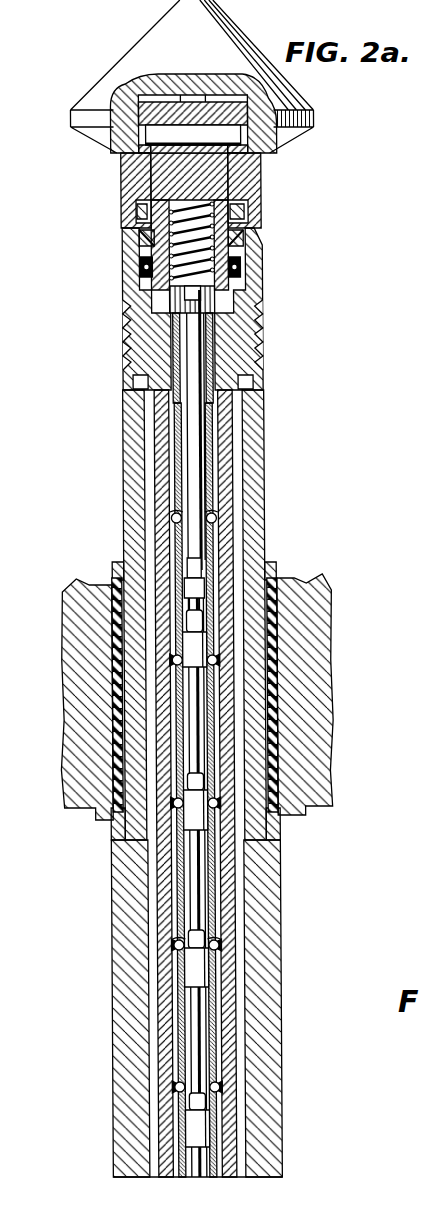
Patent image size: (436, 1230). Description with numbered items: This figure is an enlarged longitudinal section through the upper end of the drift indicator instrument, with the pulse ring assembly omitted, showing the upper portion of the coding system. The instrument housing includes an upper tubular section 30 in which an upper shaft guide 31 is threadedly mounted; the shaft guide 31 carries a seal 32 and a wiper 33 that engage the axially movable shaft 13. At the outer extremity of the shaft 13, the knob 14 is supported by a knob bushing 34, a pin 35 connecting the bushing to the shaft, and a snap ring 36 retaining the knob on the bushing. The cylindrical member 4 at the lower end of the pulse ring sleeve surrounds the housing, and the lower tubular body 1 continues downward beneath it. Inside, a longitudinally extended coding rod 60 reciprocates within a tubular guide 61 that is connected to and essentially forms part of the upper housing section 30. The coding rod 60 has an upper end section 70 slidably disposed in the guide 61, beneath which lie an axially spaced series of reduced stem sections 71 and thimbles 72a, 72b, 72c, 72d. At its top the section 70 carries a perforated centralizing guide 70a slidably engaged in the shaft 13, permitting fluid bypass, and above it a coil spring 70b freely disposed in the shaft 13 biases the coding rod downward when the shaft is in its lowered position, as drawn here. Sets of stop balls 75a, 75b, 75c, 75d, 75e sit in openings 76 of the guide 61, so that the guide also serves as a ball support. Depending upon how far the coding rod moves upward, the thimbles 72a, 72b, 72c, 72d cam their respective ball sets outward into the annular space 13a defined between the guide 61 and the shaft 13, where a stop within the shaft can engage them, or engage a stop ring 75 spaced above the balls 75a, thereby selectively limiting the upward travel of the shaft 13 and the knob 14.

The tubular body 1 is at (283, 923).
The cylindrical member 4 is at (298, 578).
The shaft 13 is at (223, 498).
The annular space 13a is at (235, 388).
The knob 14 is at (205, 21).
The upper tubular section 30 is at (265, 423).
The upper shaft guide 31 is at (253, 252).
The seal means 32 is at (143, 268).
The wiper means 33 is at (140, 243).
The knob bushing 34 is at (147, 182).
The pin 35 is at (153, 135).
The snap ring 36 is at (260, 190).
The coding rod 60 is at (190, 380).
The guide 61 is at (177, 420).
The upper end section 70 is at (212, 345).
The centralizing guide 70a is at (218, 290).
The coil spring 70b is at (173, 215).
The reduced stem sections 71 is at (200, 577).
The thimble 72a is at (190, 647).
The thimble 72b is at (190, 818).
The thimble 72c is at (192, 970).
The thimble 72d is at (195, 1123).
The stop ring 75 is at (175, 355).
The stop balls 75a is at (173, 518).
The stop balls 75b is at (173, 660).
The stop balls 75c is at (177, 802).
The stop balls 75d is at (183, 945).
The stop balls 75e is at (183, 1087).
The openings 76 is at (177, 513).